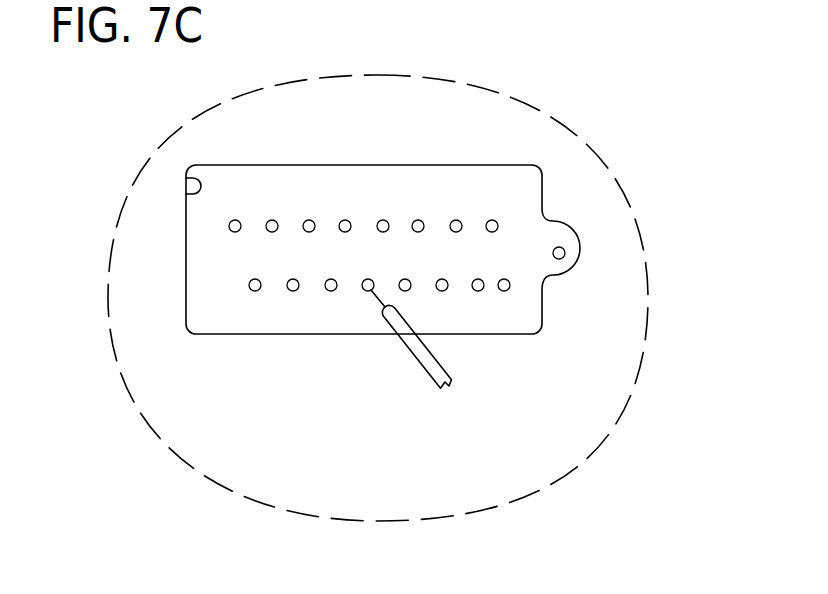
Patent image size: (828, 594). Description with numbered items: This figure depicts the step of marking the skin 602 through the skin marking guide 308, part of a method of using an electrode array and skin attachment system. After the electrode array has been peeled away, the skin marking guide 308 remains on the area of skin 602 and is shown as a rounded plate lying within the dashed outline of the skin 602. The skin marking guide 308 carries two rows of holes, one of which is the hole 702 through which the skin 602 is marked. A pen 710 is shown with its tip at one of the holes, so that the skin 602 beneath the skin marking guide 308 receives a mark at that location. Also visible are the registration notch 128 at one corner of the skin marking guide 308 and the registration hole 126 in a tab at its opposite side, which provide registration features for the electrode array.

The skin 602 is at (585, 428).
The skin marking guide 308 is at (567, 237).
The registration notch 128 is at (187, 183).
The hole 702 is at (497, 222).
The registration hole 126 is at (564, 256).
The pen 710 is at (408, 358).